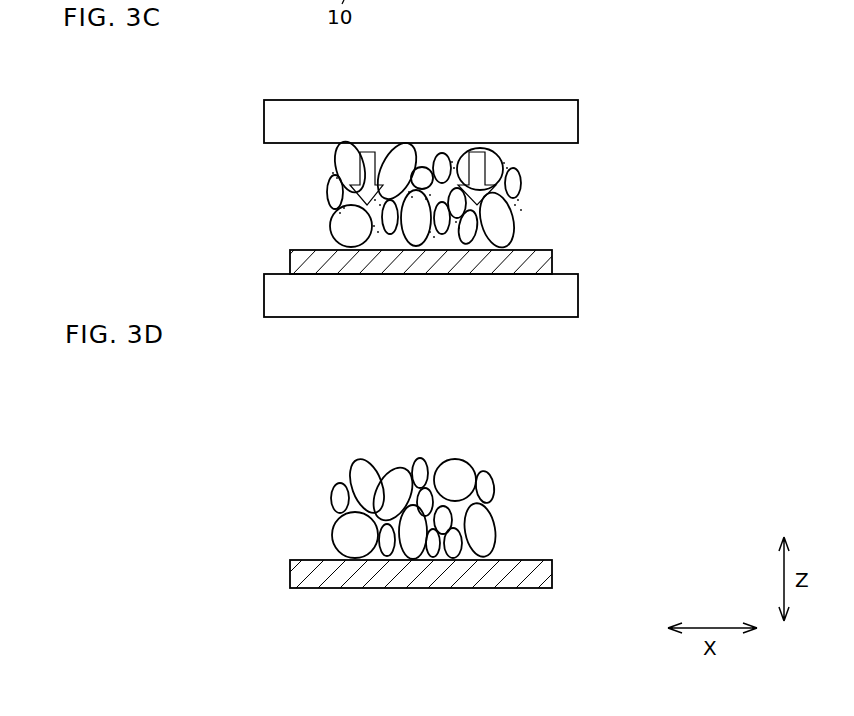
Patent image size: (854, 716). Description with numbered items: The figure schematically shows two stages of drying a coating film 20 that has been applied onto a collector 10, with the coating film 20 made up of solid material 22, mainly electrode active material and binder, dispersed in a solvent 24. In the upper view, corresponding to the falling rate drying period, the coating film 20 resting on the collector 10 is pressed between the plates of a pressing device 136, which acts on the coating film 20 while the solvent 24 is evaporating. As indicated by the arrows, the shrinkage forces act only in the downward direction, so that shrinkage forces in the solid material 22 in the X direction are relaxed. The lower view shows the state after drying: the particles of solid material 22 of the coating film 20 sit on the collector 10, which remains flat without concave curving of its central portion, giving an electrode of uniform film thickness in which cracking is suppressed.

In FIG. 3C, the collector 10 is at (552, 262).
In FIG. 3D, the collector 10 is at (350, 588).
In FIG. 3C, the coating film 20 is at (491, 194).
In FIG. 3D, the coating film 20 is at (455, 472).
In FIG. 3C, the solid material 22 is at (512, 185).
In FIG. 3D, the solid material 22 is at (469, 497).
In FIG. 3C, the solvent 24 is at (517, 205).
In FIG. 3C, the pressing device 136 is at (448, 100).